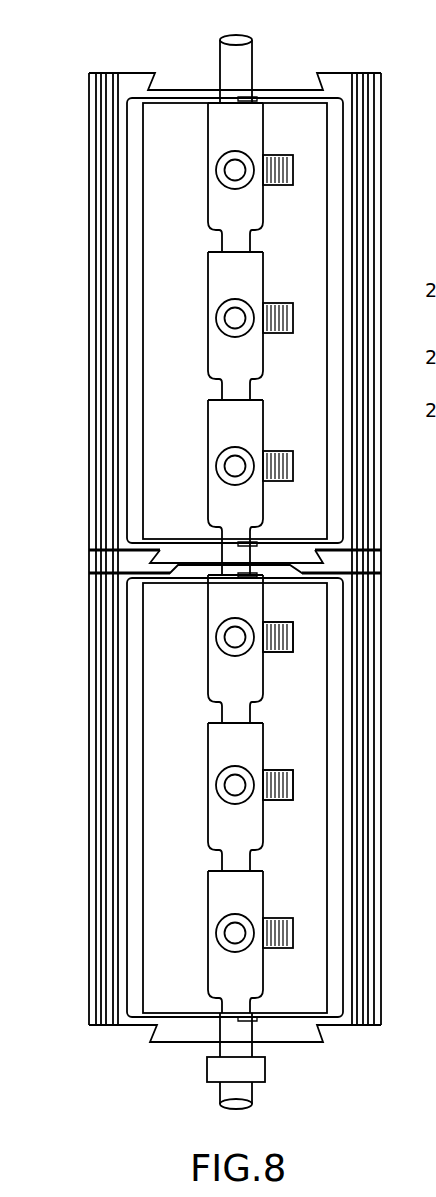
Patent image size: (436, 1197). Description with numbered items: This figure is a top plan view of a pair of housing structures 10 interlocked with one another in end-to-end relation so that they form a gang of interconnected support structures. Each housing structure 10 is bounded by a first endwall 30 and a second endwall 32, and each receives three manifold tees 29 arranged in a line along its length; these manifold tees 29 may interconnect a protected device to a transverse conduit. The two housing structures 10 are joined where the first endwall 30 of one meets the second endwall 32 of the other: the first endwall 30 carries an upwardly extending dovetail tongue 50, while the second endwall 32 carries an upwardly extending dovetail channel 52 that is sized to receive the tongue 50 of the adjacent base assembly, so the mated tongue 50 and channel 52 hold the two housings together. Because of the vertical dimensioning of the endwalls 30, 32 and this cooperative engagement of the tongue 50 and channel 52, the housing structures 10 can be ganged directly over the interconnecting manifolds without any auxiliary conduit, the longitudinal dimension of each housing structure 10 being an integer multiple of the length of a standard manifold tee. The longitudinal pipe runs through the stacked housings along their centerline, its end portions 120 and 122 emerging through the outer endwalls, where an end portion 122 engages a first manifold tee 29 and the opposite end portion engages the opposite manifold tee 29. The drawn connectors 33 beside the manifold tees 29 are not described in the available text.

The housing structure 10 is at (372, 245).
The manifold tee 29 is at (231, 162).
The first endwall 30 is at (182, 553).
The second endwall 32 is at (270, 88).
The cell connector 33 is at (349, 714).
The dovetail tongue 50 is at (289, 553).
The dovetail channel 52 is at (297, 568).
The end portion of longitudinal pipe 120 is at (227, 1100).
The end portion of longitudinal pipe 122 is at (240, 55).